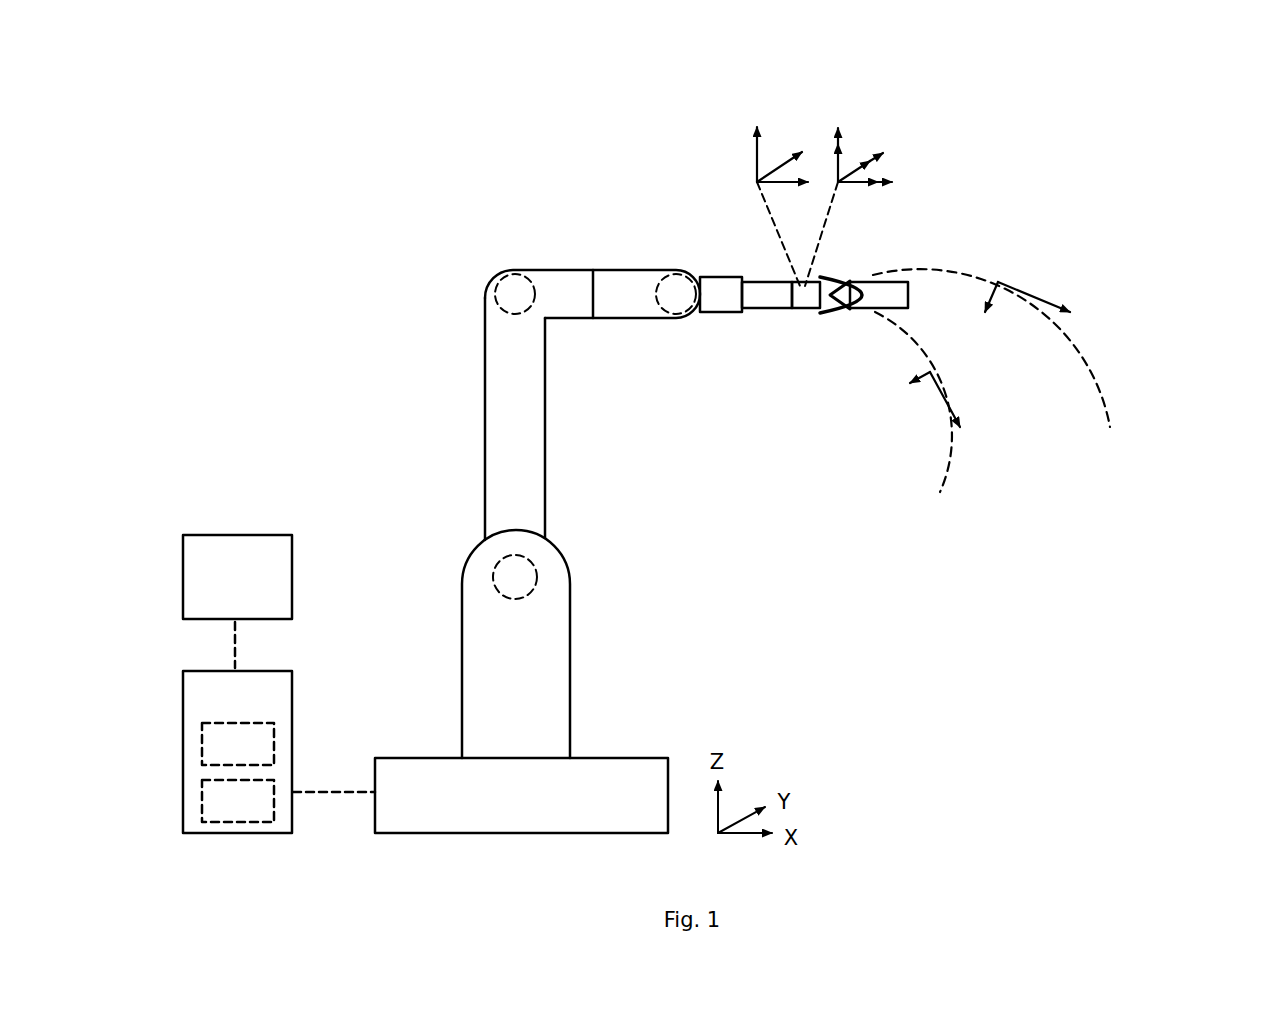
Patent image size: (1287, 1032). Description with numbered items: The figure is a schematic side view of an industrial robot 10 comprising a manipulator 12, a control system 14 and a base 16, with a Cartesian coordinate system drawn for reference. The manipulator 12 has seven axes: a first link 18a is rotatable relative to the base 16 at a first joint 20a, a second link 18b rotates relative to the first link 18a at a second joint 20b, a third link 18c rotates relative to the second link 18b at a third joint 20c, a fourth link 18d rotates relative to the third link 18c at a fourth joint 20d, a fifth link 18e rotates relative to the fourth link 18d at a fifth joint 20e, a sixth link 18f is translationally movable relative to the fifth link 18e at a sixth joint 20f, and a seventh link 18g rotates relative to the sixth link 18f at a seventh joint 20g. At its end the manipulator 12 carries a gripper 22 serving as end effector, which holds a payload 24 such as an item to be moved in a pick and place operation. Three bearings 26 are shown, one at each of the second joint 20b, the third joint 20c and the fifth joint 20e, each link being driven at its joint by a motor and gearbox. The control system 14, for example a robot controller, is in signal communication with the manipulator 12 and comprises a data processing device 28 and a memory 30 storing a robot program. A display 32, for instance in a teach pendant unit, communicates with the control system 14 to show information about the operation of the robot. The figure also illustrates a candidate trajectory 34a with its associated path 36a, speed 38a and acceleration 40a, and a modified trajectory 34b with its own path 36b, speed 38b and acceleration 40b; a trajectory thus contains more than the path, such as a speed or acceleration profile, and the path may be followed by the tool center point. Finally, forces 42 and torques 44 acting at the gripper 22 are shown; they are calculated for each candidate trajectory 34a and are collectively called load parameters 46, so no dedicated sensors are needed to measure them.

The industrial robot 10 is at (322, 112).
The manipulator 12 is at (482, 193).
The control system 14 is at (224, 705).
The base 16 is at (500, 807).
The first link 18a is at (480, 648).
The second link 18b is at (513, 433).
The third link 18c is at (566, 296).
The fourth link 18d is at (630, 296).
The fifth link 18e is at (715, 295).
The sixth link 18f is at (752, 298).
The seventh link 18g is at (806, 294).
The first joint 20a is at (505, 757).
The second joint 20b is at (514, 577).
The third joint 20c is at (516, 296).
The fourth joint 20d is at (595, 295).
The fifth joint 20e is at (678, 296).
The sixth joint 20f is at (745, 305).
The seventh joint 20g is at (796, 305).
The gripper 22 is at (845, 276).
The payload 24 is at (905, 296).
The bearing 26 is at (540, 570).
The data processing device 28 is at (224, 757).
The memory 30 is at (224, 813).
The display 32 is at (224, 590).
The candidate trajectory 34a is at (876, 431).
The modified trajectory 34b is at (1133, 327).
The path 36a is at (942, 470).
The path 36b is at (1110, 412).
The speed 38a is at (955, 408).
The speed 38b is at (1045, 298).
The acceleration 40a is at (920, 378).
The acceleration 40b is at (1000, 296).
The forces 42 is at (780, 130).
The torques 44 is at (862, 130).
The load parameters 46 is at (908, 73).